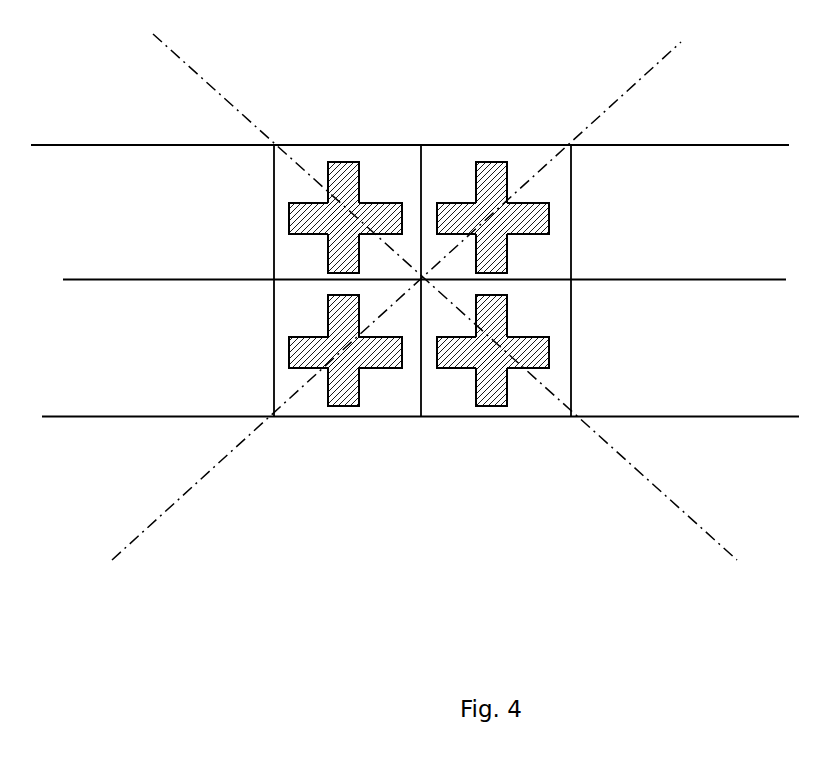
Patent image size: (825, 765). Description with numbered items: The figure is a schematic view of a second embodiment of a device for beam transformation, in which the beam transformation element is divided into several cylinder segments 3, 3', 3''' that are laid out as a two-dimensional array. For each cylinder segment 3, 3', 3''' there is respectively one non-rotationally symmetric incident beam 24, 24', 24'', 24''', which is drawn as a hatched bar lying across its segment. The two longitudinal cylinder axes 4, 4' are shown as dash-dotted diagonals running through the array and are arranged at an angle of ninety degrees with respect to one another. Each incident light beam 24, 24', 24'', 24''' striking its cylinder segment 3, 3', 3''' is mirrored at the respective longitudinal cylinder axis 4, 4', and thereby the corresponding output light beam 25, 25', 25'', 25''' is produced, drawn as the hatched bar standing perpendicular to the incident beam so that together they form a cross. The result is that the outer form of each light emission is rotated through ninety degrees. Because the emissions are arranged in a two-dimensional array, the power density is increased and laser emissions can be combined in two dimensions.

The cylinder segment 3 is at (415, 281).
The cylinder segment 3' is at (290, 338).
The cylinder segment 3''' is at (633, 281).
The longitudinal cylinder axis 4 is at (370, 301).
The longitudinal cylinder axis 4' is at (392, 297).
The incident beam 24 is at (559, 348).
The incident beam 24' is at (274, 354).
The incident beam 24'' is at (357, 158).
The incident beam 24''' is at (557, 211).
The output light beam 25 is at (505, 397).
The output light beam 25' is at (352, 398).
The output light beam 25'' is at (328, 165).
The output light beam 25''' is at (487, 165).